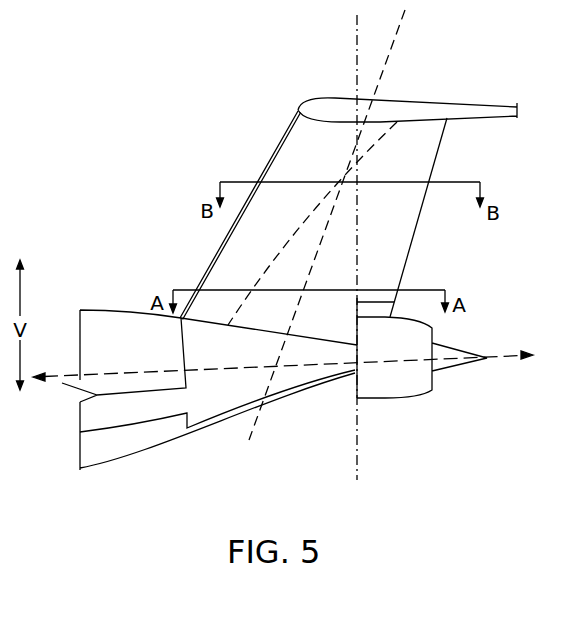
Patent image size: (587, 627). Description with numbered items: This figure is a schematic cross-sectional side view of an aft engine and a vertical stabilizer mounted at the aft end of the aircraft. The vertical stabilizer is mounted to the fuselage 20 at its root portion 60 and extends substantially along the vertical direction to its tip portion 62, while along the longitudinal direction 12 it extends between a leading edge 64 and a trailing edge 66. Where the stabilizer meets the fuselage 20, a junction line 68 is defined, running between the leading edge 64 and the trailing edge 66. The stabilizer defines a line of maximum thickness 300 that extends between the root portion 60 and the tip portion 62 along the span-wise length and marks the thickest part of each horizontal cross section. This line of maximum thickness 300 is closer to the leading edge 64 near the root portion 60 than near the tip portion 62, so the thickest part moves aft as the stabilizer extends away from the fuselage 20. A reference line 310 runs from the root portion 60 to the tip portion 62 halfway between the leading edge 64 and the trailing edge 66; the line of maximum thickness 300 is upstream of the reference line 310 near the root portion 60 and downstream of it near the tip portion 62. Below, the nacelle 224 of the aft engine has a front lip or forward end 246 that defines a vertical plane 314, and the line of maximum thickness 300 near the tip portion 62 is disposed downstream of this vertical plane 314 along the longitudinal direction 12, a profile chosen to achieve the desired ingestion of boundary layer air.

The longitudinal direction 12 is at (63, 384).
The fuselage 20 is at (93, 470).
The root portion 60 is at (205, 327).
The tip portion 62 is at (443, 97).
The leading edge 64 is at (268, 146).
The trailing edge 66 is at (418, 232).
The junction line 68 is at (311, 341).
The nacelle 224 is at (388, 400).
The forward end 246 is at (352, 392).
The line of maximum thickness 300 is at (380, 143).
The reference line 310 is at (398, 43).
The vertical plane 314 is at (356, 35).